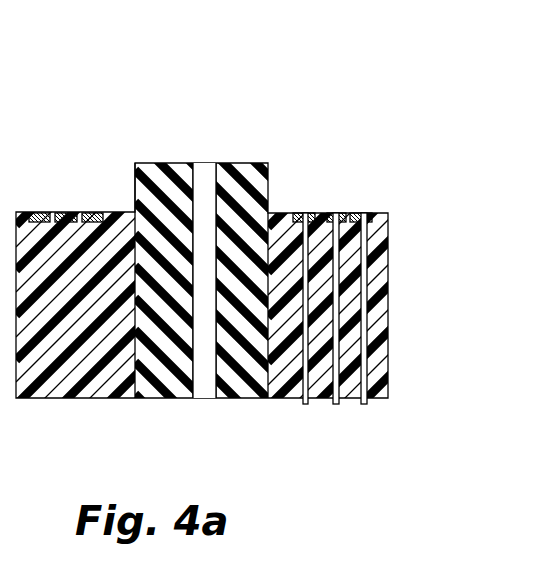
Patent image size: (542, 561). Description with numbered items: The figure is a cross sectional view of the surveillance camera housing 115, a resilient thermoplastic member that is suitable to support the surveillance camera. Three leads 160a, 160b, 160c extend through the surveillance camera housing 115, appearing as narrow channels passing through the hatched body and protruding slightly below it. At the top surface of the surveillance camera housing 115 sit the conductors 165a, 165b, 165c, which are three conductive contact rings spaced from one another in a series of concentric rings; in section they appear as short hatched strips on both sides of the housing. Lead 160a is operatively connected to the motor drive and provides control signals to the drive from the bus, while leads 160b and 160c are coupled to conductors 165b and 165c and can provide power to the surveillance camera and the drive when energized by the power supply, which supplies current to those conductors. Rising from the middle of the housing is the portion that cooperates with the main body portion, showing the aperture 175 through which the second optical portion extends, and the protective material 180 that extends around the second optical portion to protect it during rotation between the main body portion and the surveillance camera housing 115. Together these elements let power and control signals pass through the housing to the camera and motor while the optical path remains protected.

The surveillance camera housing 115 is at (35, 399).
The lead 160a is at (356, 398).
The lead 160b is at (335, 395).
The lead 160c is at (300, 375).
The conductor 165a is at (39, 213).
The conductor 165b is at (65, 213).
The conductor 165c is at (95, 212).
The aperture 175 is at (200, 177).
The protective material 180 is at (225, 177).